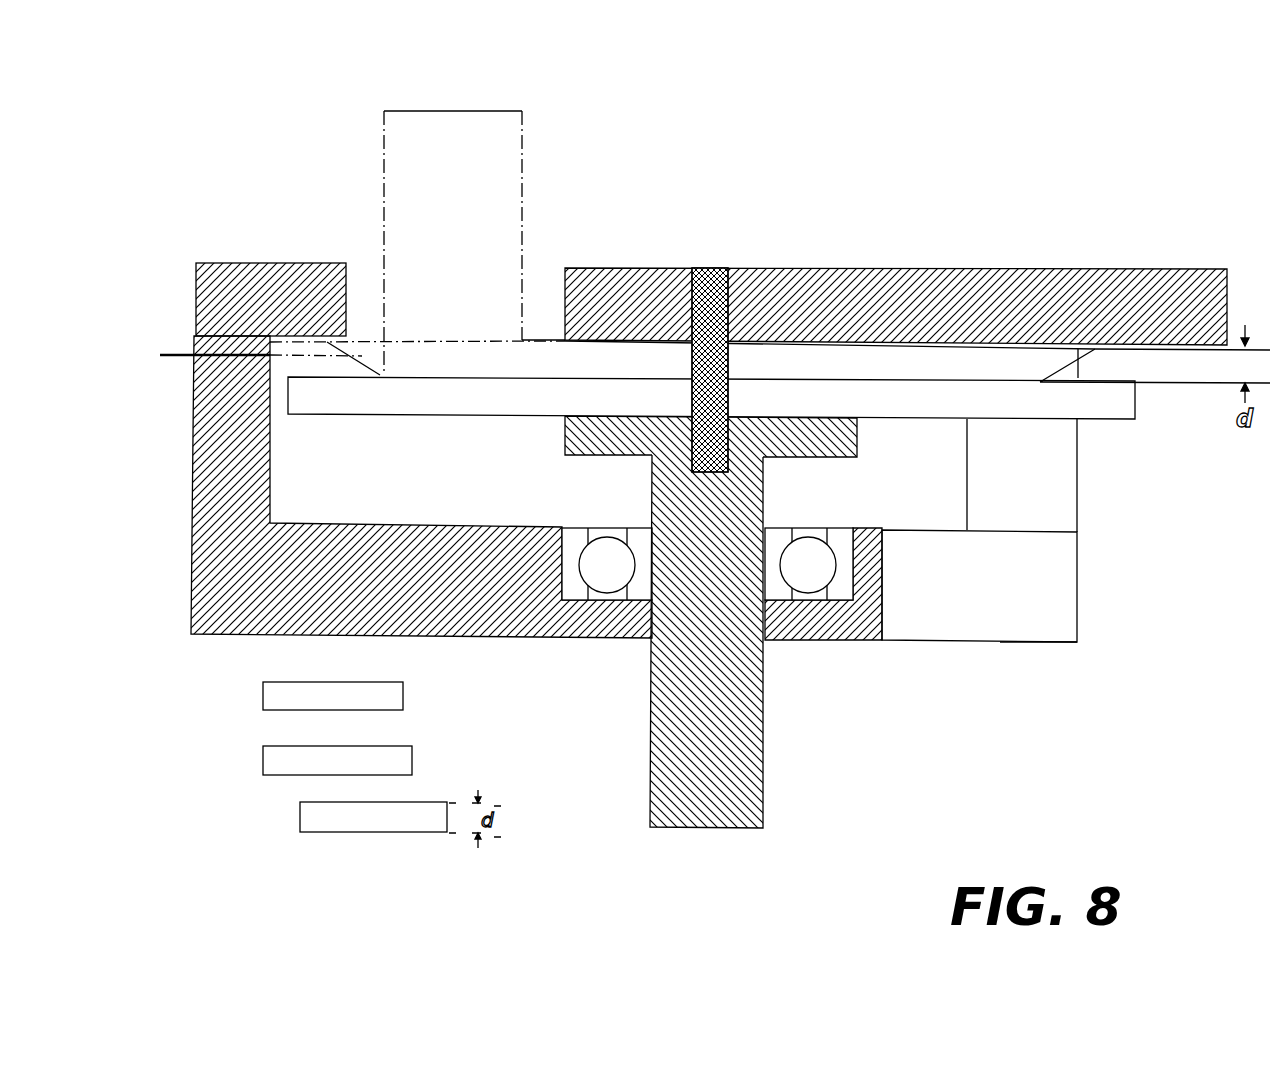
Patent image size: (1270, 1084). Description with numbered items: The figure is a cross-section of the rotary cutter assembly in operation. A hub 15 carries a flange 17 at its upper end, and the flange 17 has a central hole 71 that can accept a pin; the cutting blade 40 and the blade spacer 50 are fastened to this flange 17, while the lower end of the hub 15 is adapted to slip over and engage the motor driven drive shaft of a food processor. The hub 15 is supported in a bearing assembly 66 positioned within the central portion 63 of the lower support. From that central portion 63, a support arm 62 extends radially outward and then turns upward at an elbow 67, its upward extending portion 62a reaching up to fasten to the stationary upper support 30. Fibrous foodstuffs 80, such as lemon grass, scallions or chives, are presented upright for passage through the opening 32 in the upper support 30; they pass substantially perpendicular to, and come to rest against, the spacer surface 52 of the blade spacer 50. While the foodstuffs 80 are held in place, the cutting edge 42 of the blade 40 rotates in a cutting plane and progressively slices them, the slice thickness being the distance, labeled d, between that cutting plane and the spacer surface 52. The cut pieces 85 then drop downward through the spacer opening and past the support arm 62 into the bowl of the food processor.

The hub 15 is at (650, 697).
The flange 17 is at (575, 452).
The upper support 30 is at (960, 268).
The opening 32 is at (533, 275).
The cutting blade 40 is at (867, 350).
The cutting edge 42 is at (244, 355).
The blade spacer 50 is at (413, 395).
The spacer surface 52 is at (300, 375).
The support arm 62 is at (903, 643).
The upward extending portion of the support arm 62a is at (1077, 523).
The central portion 63 is at (768, 643).
The bearing assembly 66 is at (583, 637).
The elbow 67 is at (1078, 642).
The central hole 71 is at (710, 273).
The fibrous foodstuffs 80 is at (507, 110).
The cut pieces 85 is at (243, 690).